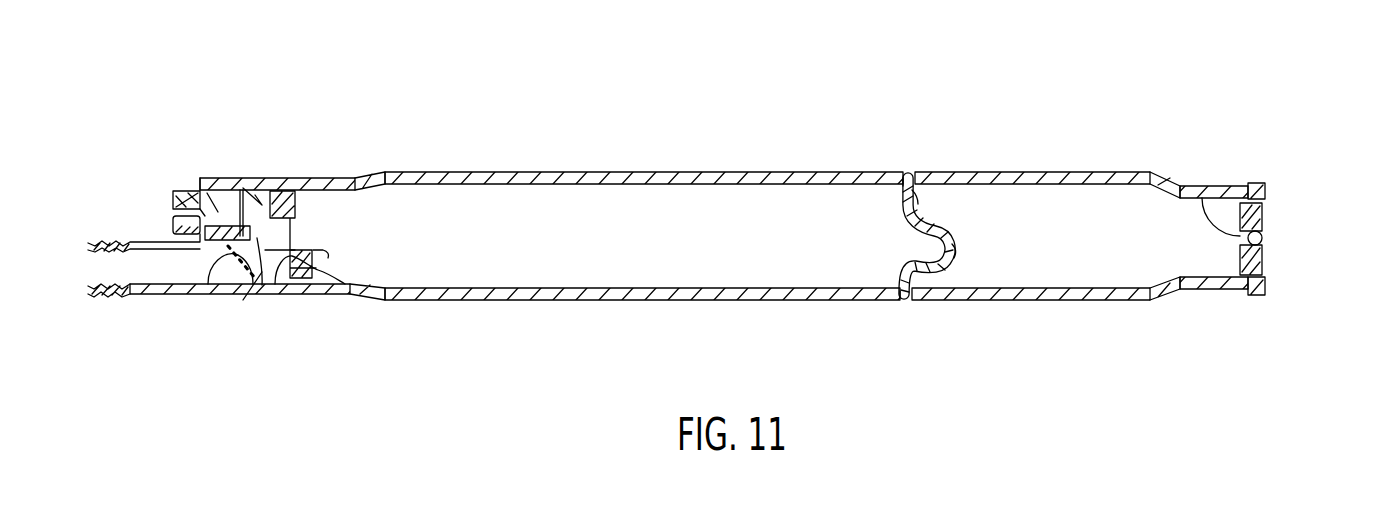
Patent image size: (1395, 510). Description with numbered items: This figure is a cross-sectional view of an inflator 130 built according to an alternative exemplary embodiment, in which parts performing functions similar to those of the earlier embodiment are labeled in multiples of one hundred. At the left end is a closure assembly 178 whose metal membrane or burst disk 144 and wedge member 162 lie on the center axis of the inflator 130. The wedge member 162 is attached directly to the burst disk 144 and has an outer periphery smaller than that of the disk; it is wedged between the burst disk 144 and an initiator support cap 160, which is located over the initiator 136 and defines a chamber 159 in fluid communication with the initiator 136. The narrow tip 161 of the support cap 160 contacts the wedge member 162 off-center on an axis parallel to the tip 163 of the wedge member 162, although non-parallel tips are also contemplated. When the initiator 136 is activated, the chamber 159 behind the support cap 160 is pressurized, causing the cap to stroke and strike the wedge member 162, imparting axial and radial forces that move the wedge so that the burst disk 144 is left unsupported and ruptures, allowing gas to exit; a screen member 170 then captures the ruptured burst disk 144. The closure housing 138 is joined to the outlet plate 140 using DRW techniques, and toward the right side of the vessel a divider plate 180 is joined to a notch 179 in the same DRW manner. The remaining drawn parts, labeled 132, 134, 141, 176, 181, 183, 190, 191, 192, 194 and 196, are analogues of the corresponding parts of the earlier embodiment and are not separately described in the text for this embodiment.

The inflator 130 is at (668, 156).
The tube 132 is at (559, 207).
The tube wall 134 is at (576, 300).
The initiator 136 is at (206, 178).
The closure housing 138 is at (152, 294).
The outlet plate 140 is at (315, 264).
The retainer 141 is at (285, 255).
The burst disk 144 is at (320, 256).
The chamber 159 is at (234, 178).
The initiator support cap 160 is at (250, 178).
The narrow tip 161 is at (282, 178).
The wedge member 162 is at (345, 178).
The tip 163 is at (243, 300).
The screen member 170 is at (208, 286).
The tube section 176 is at (1061, 207).
The closure assembly 178 is at (140, 184).
The notch 179 is at (900, 300).
The divider plate 180 is at (933, 282).
The bend 181 is at (966, 233).
The upper bend 183 is at (935, 180).
The end cap 190 is at (1263, 277).
The upper wall 191 is at (900, 176).
The closure 192 is at (1212, 198).
The ball 194 is at (1265, 238).
The terminal 196 is at (190, 178).